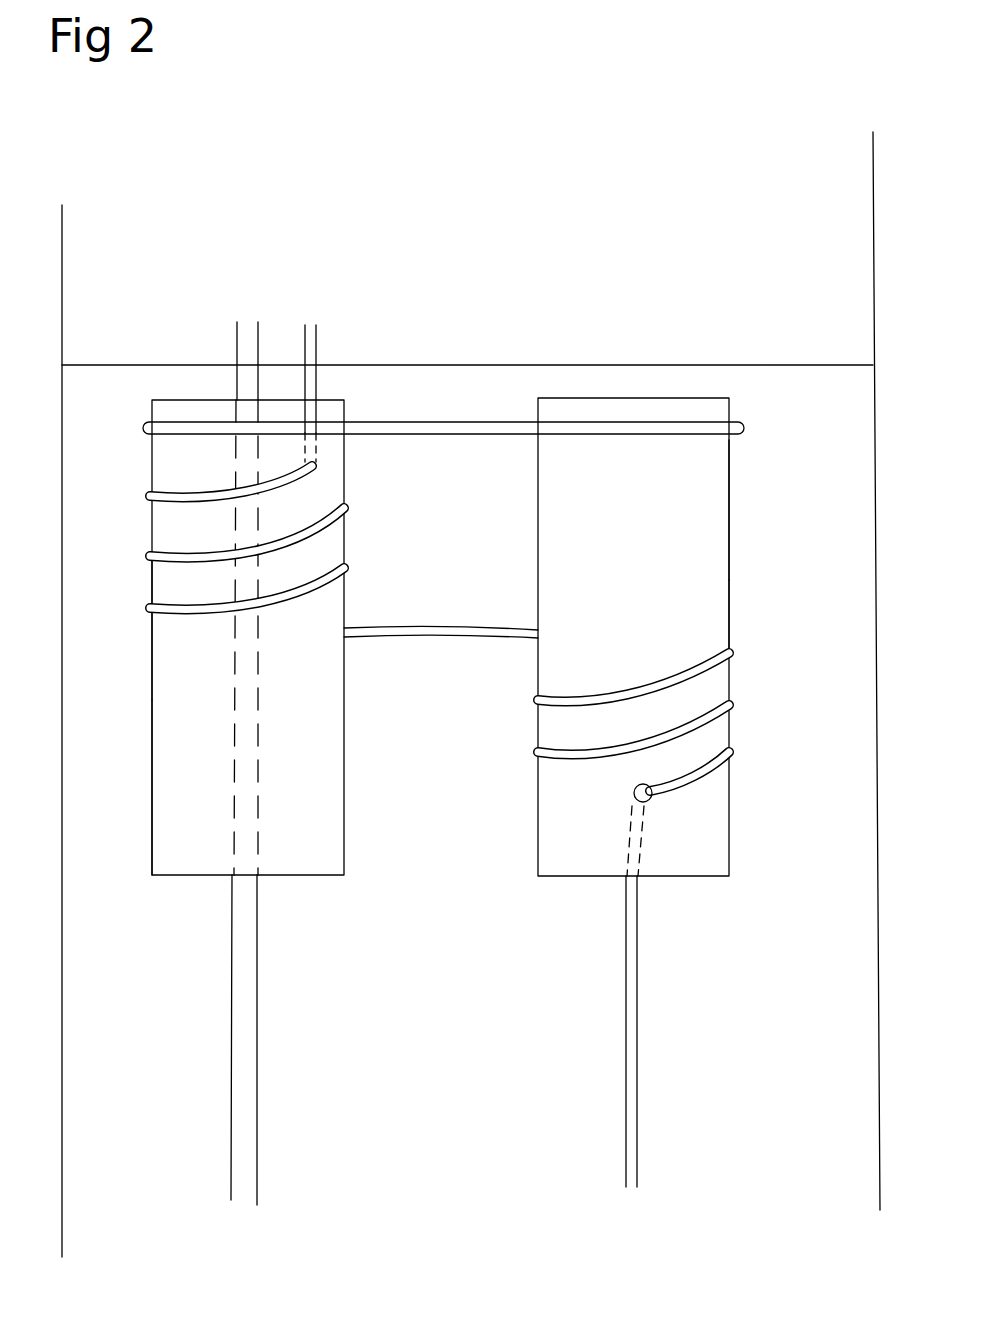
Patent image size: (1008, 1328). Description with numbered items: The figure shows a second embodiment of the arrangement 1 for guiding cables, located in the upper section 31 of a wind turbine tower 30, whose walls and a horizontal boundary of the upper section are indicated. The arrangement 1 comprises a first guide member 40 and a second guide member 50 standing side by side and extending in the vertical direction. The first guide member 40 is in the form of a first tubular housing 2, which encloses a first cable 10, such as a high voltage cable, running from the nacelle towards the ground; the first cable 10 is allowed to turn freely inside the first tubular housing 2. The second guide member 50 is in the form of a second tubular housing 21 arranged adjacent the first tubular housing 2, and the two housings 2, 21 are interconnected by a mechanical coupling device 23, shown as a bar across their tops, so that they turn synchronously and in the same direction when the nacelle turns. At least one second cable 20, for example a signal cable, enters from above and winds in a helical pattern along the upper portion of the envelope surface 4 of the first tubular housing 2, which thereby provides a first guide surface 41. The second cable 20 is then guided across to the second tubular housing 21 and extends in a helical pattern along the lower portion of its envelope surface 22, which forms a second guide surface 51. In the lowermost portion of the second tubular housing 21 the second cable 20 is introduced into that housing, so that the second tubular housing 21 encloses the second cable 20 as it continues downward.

The arrangement 1 is at (163, 304).
The first tubular housing 2 is at (152, 635).
The envelope surface 4 is at (150, 740).
The first cable 10 is at (258, 334).
The second cable 20 is at (316, 343).
The second tubular housing 21 is at (730, 533).
The envelope surface 22 is at (730, 620).
The mechanical coupling device 23 is at (744, 427).
The wind turbine tower 30 is at (873, 294).
The upper section 31 is at (439, 365).
The first guide member 40 is at (145, 838).
The first guide surface 41 is at (345, 790).
The second guide member 50 is at (738, 820).
The second guide surface 51 is at (730, 688).